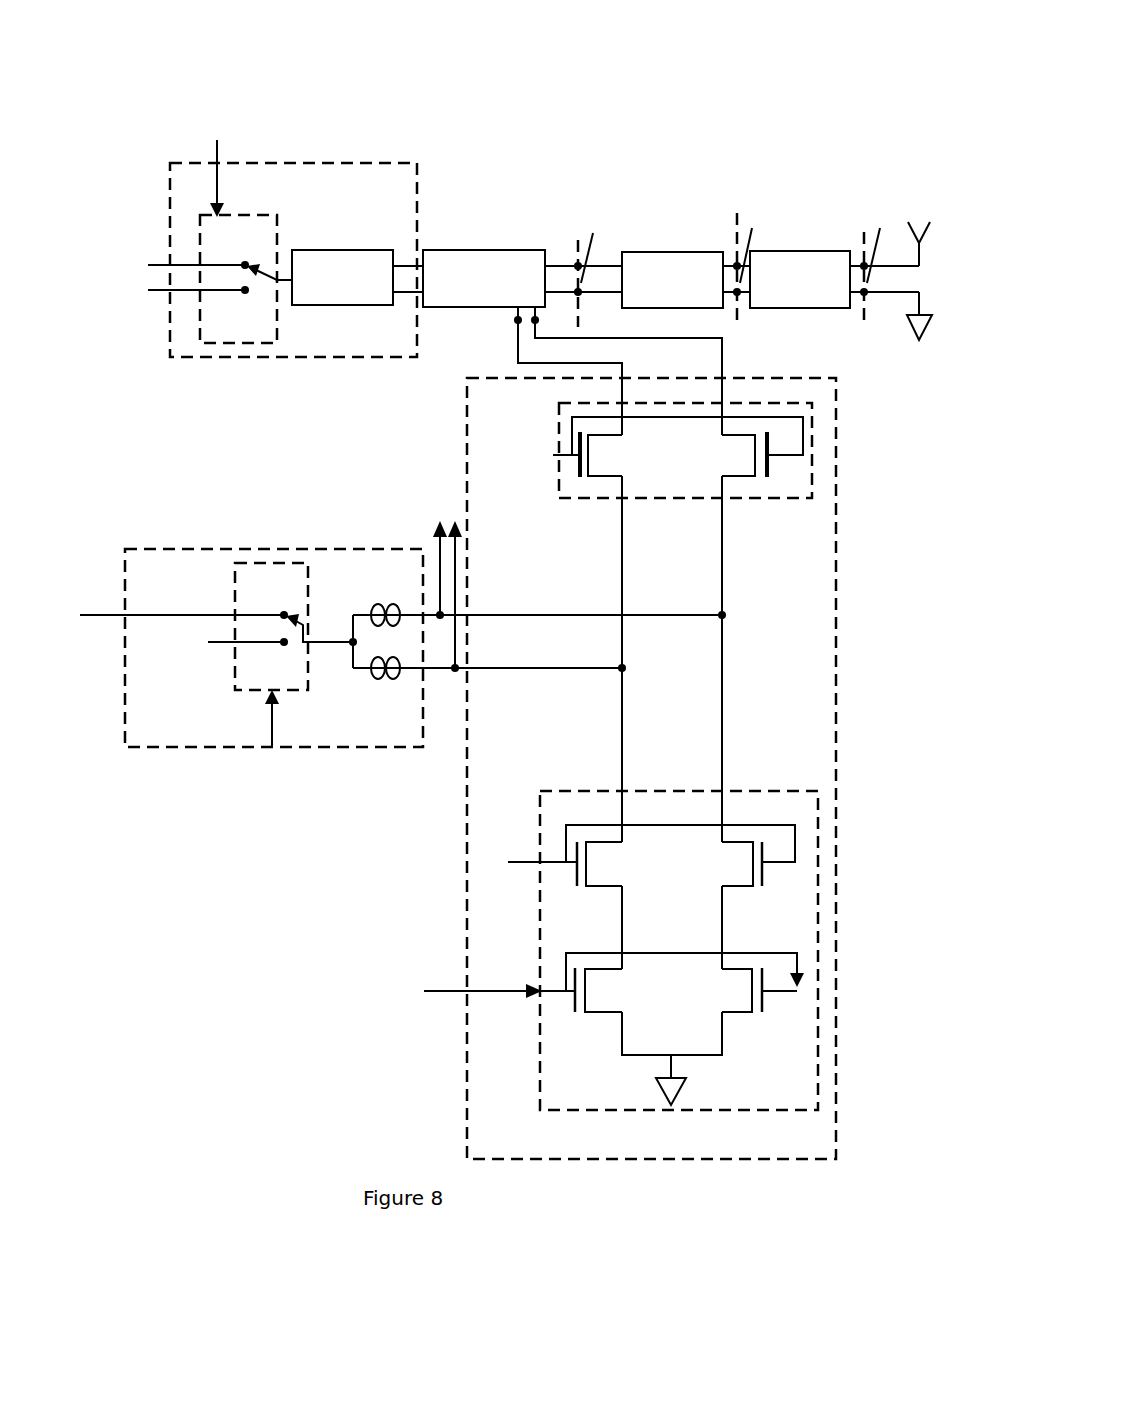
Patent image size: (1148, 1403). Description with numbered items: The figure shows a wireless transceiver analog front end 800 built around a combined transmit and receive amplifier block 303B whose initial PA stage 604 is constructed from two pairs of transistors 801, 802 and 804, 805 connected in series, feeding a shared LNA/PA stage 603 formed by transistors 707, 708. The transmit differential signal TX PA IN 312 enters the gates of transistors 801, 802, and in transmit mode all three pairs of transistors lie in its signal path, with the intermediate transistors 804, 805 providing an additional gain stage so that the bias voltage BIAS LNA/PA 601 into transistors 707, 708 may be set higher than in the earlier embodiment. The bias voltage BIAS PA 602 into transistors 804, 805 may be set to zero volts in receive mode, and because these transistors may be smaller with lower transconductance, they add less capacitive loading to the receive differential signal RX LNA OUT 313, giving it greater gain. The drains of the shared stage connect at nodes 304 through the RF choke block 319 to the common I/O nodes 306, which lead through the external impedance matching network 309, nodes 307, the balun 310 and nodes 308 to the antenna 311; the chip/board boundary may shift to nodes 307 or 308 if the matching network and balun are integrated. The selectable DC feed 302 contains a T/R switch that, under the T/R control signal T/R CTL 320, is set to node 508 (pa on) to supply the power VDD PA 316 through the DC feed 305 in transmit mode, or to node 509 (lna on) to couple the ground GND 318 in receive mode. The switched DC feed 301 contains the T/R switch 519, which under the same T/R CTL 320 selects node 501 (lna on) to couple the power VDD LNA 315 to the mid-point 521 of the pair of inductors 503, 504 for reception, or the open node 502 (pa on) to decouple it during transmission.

The wireless transceiver analog front end 800 is at (119, 35).
The selectable DC feed 302 is at (170, 163).
The T/R control signal T/R CTL 320 is at (287, 443).
The power VDD PA 316 is at (157, 253).
The ground GND 318 is at (172, 304).
The node (pa on) 508 is at (242, 262).
The node (lna on) 509 is at (212, 310).
The DC feed 305 is at (357, 266).
The RF choke block 319 is at (522, 265).
The common I/O nodes 306 is at (597, 266).
The external impedance matching network 309 is at (686, 266).
The nodes 307 is at (756, 266).
The balun 310 is at (834, 264).
The nodes 308 is at (877, 264).
The antenna 311 is at (922, 231).
The differential nodes 304 is at (532, 325).
The combined transmit and receive amplifier block 303B is at (838, 428).
The shared LNA/PA stage 603 is at (598, 498).
The bias voltage BIAS LNA/PA 601 is at (640, 436).
The transistor 707 is at (605, 454).
The transistor 708 is at (741, 454).
The receive differential signal RX LNA OUT 313 is at (388, 575).
The power VDD LNA 315 is at (174, 575).
The node (lna on) 501 is at (282, 612).
The open node (pa on) 502 is at (283, 645).
The inductor 503 is at (537, 603).
The inductor 504 is at (487, 682).
The mid-point 521 is at (348, 652).
The T/R switch 519 is at (225, 643).
The switched DC feed 301 is at (180, 747).
The bias voltage BIAS PA 602 is at (634, 854).
The transistor 804 is at (603, 864).
The transistor 805 is at (739, 864).
The transmit differential signal TX PA IN 312 is at (569, 970).
The transistor 801 is at (602, 990).
The transistor 802 is at (739, 990).
The initial PA stage 604 is at (538, 1112).